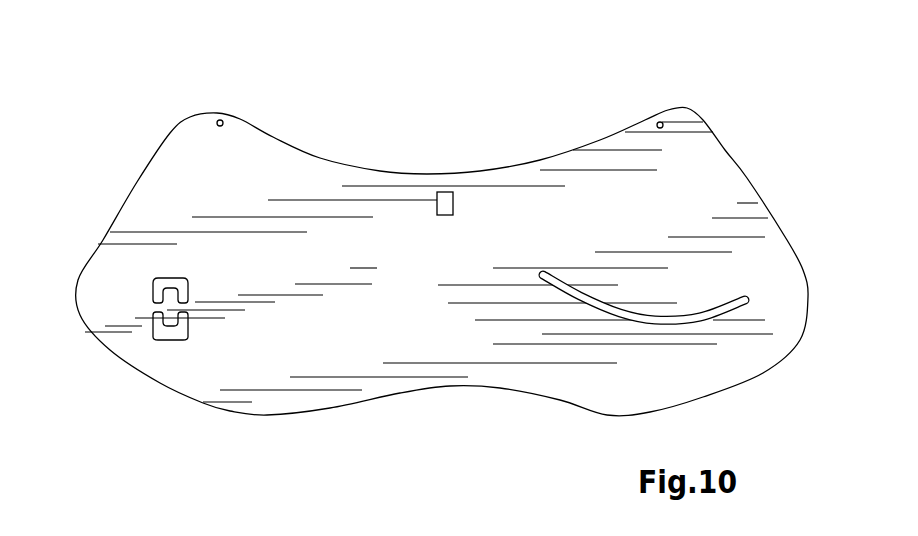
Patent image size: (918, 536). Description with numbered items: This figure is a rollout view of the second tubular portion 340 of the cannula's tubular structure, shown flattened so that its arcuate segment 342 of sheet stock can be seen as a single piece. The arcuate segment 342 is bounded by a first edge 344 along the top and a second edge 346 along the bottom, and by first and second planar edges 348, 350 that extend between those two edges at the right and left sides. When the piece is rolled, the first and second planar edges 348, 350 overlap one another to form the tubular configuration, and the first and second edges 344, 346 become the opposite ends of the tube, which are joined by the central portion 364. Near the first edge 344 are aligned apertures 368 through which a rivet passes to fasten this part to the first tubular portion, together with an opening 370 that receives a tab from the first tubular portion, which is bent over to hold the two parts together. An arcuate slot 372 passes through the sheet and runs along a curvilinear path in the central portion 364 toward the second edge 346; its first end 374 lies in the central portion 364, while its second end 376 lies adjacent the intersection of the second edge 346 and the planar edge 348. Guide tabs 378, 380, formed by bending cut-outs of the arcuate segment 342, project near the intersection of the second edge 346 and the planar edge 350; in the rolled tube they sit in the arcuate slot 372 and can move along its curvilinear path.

The second tubular portion 340 is at (444, 287).
The arcuate segment 342 is at (565, 178).
The first edge 344 is at (392, 172).
The second edge 346 is at (329, 403).
The first planar edge 348 is at (748, 178).
The second planar edge 350 is at (138, 181).
The central portion 364 is at (430, 320).
The aligned apertures 368 is at (218, 118).
The opening 370 is at (445, 198).
The arcuate slot 372 is at (632, 318).
The first end of arcuate slot 374 is at (543, 283).
The second end of arcuate slot 376 is at (748, 305).
The guide tab 378 is at (168, 290).
The guide tab 380 is at (170, 328).